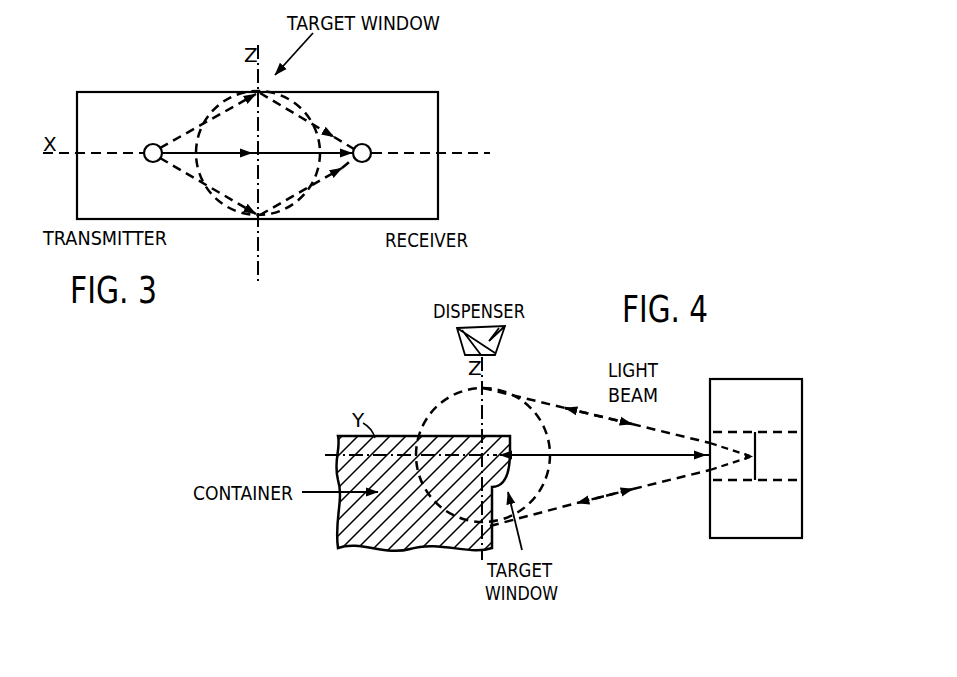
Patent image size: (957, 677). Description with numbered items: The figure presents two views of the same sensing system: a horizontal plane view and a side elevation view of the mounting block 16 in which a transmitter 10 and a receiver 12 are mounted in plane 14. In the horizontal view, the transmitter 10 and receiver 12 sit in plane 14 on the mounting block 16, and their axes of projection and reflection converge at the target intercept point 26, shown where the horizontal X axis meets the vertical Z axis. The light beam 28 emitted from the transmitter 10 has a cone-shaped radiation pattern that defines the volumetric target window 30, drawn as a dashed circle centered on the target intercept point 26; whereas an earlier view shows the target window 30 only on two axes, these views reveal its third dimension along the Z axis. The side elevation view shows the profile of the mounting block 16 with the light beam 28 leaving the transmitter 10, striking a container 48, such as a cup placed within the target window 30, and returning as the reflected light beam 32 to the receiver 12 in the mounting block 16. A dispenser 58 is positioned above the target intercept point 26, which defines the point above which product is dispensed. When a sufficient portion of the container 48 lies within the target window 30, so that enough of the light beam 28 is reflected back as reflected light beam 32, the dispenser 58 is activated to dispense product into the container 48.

In FIG. 3, the transmitter 10 is at (146, 147).
In FIG. 4, the transmitter 10 is at (789, 467).
In FIG. 3, the receiver 12 is at (369, 161).
In FIG. 3, the plane 14 is at (412, 133).
In FIG. 4, the plane 14 is at (708, 515).
In FIG. 3, the mounting block 16 is at (459, 78).
In FIG. 4, the mounting block 16 is at (770, 374).
In FIG. 3, the target intercept point 26 is at (262, 158).
In FIG. 4, the target intercept point 26 is at (470, 446).
In FIG. 3, the light beam 28 is at (182, 145).
In FIG. 4, the light beam 28 is at (576, 507).
In FIG. 3, the volumetric target window 30 is at (272, 197).
In FIG. 4, the volumetric target window 30 is at (468, 390).
In FIG. 3, the reflected light beam 32 is at (331, 138).
In FIG. 4, the reflected light beam 32 is at (641, 490).
In FIG. 4, the container 48 is at (377, 548).
In FIG. 4, the dispenser 58 is at (499, 348).